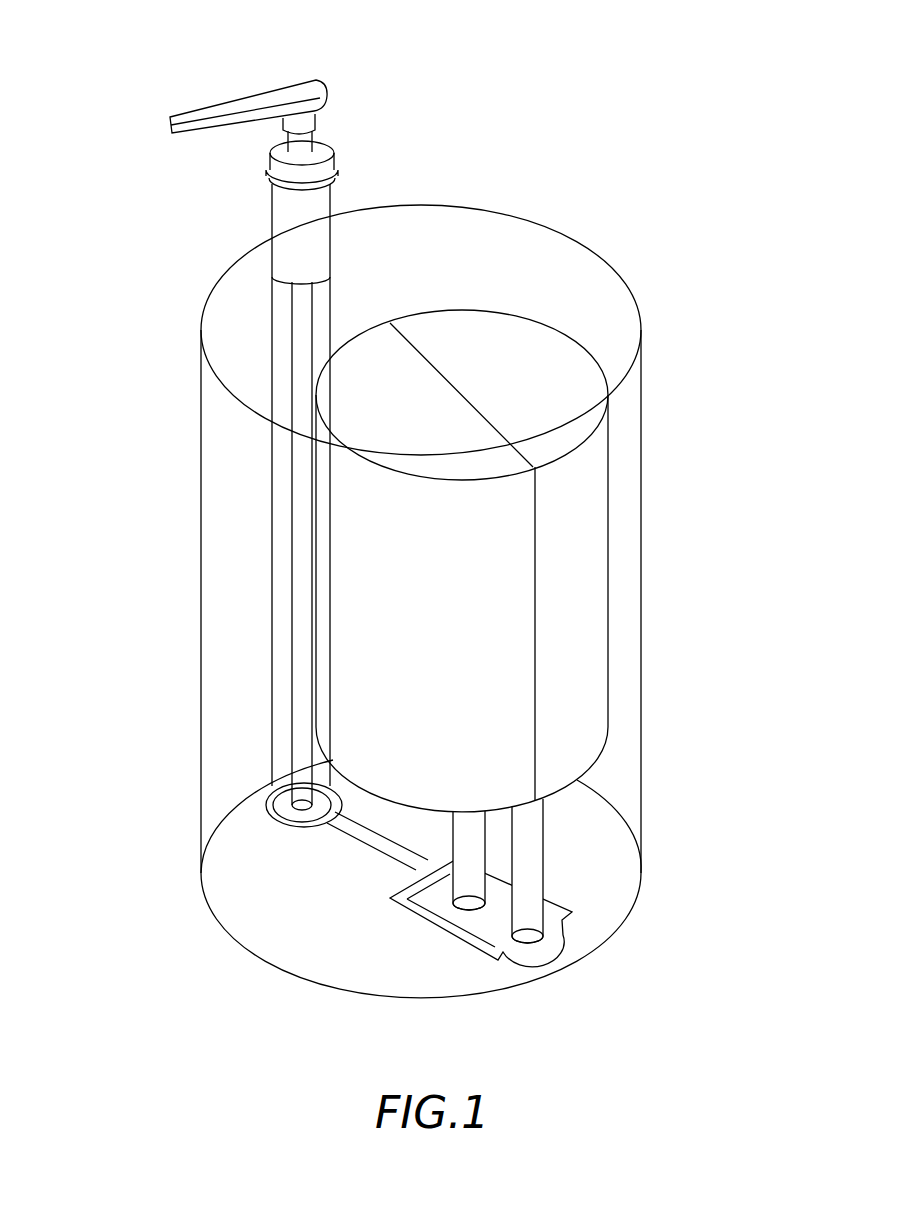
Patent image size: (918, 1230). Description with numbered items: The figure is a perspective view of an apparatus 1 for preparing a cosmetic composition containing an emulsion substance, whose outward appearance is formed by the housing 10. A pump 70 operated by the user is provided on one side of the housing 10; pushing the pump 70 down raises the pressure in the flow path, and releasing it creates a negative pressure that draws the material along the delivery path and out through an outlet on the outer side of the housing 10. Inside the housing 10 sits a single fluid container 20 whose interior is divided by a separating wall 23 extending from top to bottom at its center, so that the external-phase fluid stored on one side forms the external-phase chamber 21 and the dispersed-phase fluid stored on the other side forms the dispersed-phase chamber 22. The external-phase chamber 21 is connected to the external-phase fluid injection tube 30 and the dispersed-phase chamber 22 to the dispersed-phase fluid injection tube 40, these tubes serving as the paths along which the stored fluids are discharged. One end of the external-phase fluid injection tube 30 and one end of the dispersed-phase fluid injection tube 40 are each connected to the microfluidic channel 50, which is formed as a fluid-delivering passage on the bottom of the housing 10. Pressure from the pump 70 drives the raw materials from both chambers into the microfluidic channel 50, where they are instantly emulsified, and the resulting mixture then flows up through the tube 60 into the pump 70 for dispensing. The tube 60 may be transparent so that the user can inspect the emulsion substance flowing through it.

The apparatus for preparing a cosmetic composition 1 is at (421, 528).
The housing 10 is at (600, 273).
The fluid container 20 is at (414, 554).
The external-phase chamber 21 is at (547, 377).
The dispersed-phase chamber 22 is at (378, 400).
The separating wall 23 is at (537, 550).
The external-phase fluid injection tube 30 is at (523, 852).
The dispersed-phase fluid injection tube 40 is at (470, 835).
The microfluidic channel 50 is at (392, 900).
The tube 60 is at (300, 648).
The pump 70 is at (300, 93).